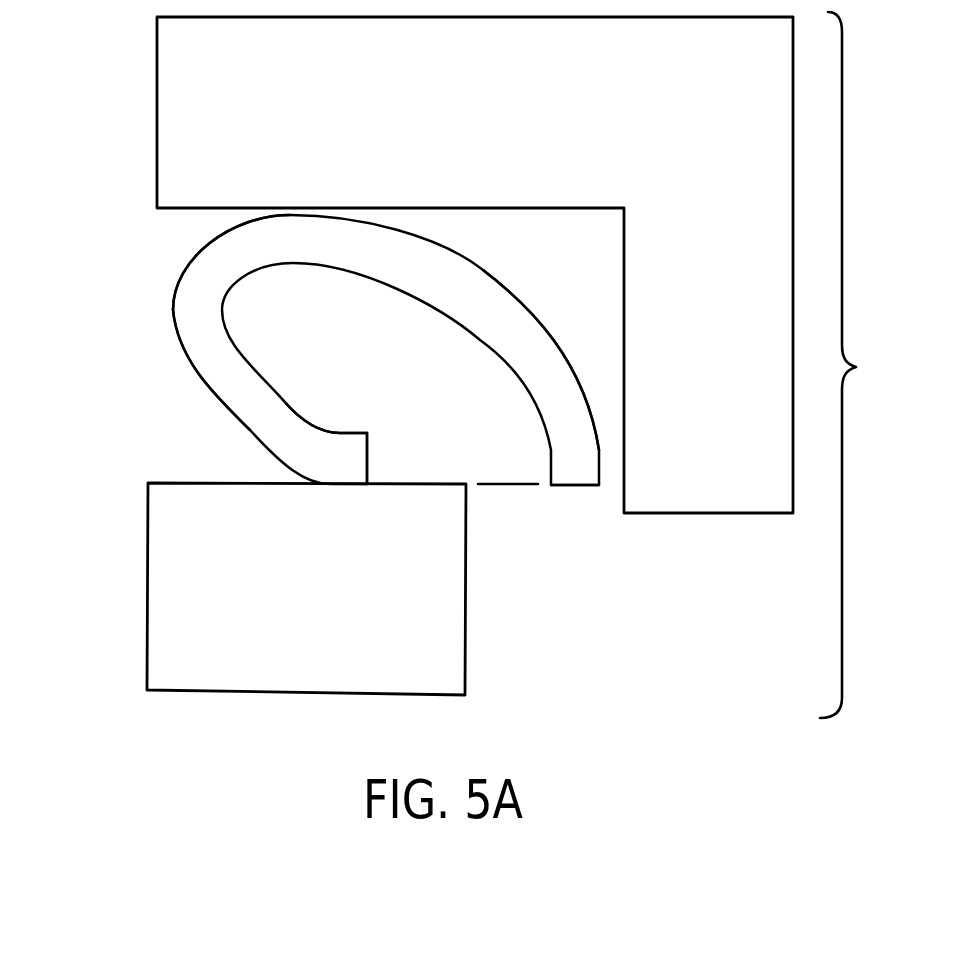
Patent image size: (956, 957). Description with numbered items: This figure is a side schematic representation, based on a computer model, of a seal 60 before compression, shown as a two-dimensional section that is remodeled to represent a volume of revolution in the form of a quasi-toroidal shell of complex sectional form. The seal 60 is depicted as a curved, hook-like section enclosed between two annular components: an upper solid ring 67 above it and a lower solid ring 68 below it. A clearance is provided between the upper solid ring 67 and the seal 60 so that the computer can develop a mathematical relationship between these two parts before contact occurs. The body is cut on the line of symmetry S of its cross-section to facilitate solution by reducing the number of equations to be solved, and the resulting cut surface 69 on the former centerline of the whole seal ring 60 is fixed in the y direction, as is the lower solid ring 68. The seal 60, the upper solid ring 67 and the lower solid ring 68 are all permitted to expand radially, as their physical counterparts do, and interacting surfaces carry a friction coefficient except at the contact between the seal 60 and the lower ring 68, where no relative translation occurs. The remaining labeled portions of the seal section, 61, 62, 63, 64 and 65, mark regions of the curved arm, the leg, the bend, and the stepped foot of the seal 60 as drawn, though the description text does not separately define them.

The seal 60 is at (118, 373).
The curved arm portion 61 is at (505, 334).
The straight leg portion 62 is at (242, 402).
The bend portion 63 is at (192, 280).
The inner step corner 64 is at (314, 440).
The step portion 65 is at (357, 458).
The upper solid ring 67 is at (168, 132).
The lower solid ring 68 is at (165, 590).
The cut surface 69 is at (570, 486).
The line of symmetry S is at (507, 486).